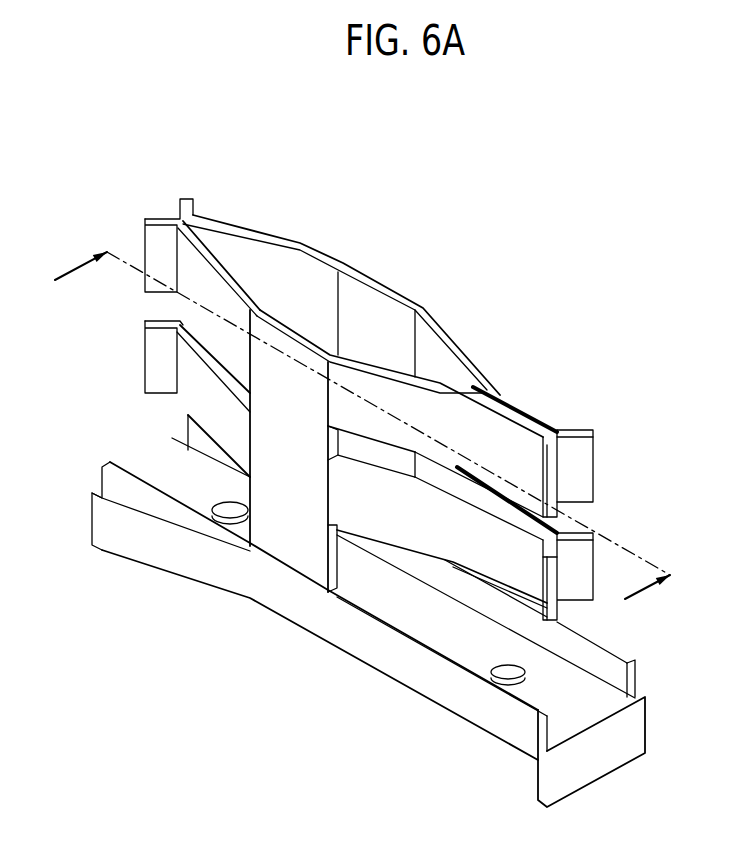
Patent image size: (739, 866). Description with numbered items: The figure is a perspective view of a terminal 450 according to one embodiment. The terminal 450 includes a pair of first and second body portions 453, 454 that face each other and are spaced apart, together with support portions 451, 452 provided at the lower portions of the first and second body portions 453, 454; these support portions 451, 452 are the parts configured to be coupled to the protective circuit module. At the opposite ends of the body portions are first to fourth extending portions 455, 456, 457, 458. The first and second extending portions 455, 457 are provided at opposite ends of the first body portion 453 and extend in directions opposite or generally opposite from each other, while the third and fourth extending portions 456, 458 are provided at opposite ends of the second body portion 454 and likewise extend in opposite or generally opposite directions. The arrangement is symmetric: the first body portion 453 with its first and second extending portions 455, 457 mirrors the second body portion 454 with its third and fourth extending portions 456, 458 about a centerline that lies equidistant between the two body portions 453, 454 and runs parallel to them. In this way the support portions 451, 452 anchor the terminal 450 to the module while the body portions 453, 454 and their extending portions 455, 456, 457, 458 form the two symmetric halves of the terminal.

The terminal 450 is at (583, 264).
The support portion 451 is at (417, 602).
The support portion 452 is at (583, 763).
The first body portion 453 is at (292, 540).
The second body portion 454 is at (398, 315).
The first extending portion 455 is at (372, 395).
The third extending portion 456 is at (467, 348).
The second extending portion 457 is at (205, 287).
The fourth extending portion 458 is at (258, 240).